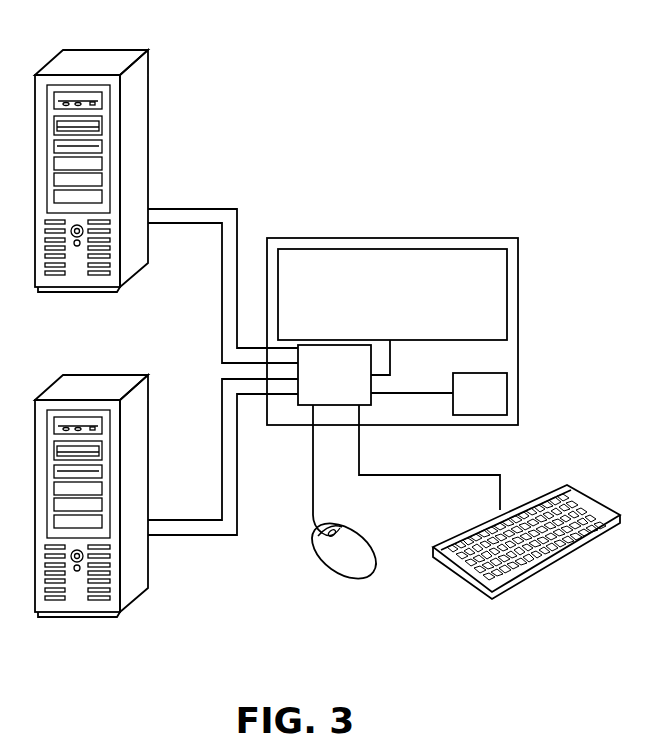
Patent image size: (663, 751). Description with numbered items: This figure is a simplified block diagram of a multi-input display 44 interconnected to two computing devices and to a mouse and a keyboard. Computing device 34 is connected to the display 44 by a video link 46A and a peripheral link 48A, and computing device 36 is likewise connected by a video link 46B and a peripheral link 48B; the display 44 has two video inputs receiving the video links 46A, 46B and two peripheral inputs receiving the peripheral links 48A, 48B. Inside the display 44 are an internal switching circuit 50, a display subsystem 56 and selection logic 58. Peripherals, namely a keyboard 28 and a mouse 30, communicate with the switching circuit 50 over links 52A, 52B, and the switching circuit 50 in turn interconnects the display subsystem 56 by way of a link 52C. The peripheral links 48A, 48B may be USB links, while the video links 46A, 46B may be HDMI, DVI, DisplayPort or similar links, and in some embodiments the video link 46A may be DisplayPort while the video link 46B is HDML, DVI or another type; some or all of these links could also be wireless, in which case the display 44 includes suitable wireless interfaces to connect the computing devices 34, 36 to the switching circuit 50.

The keyboard 28 is at (568, 491).
The mouse 30 is at (357, 543).
The computing device 34 is at (91, 62).
The computing device 36 is at (91, 388).
The display 44 is at (392, 311).
The video link 46A is at (199, 208).
The video link 46B is at (190, 520).
The peripheral link 48A is at (188, 224).
The peripheral link 48B is at (200, 536).
The switching circuit 50 is at (320, 389).
The link 52A is at (432, 475).
The link 52B is at (313, 466).
The link 52C is at (390, 365).
The display subsystem 56 is at (377, 310).
The selection logic 58 is at (466, 409).